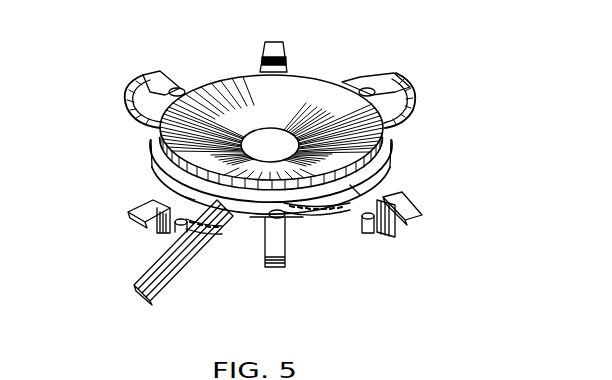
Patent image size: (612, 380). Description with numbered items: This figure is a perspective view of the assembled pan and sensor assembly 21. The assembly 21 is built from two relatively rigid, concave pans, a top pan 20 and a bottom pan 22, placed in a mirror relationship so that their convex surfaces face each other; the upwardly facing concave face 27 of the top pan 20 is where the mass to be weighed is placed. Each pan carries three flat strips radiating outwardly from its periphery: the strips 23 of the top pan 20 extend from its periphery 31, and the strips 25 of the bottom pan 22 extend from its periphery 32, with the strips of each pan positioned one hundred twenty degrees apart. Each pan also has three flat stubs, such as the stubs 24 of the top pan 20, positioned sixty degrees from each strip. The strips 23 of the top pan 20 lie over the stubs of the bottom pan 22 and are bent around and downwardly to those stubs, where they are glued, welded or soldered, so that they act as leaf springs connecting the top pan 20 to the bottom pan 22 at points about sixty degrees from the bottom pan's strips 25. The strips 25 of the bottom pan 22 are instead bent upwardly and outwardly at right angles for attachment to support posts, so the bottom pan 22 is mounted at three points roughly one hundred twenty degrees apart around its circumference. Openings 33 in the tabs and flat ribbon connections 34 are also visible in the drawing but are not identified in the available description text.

The top pan 20 is at (307, 80).
The pan and sensor assembly 21 is at (118, 60).
The bottom pan 22 is at (395, 170).
The flat strips of the top pan 23 is at (145, 75).
The flat stubs of the top pan 24 is at (282, 65).
The flat strips of the bottom pan 25 is at (273, 43).
The concave face of the top pan 27 is at (333, 110).
The periphery of the top pan 31 is at (392, 138).
The periphery of the bottom pan 32 is at (153, 180).
The mounting holes 33 is at (182, 88).
The ribbon conductors 34 is at (178, 246).